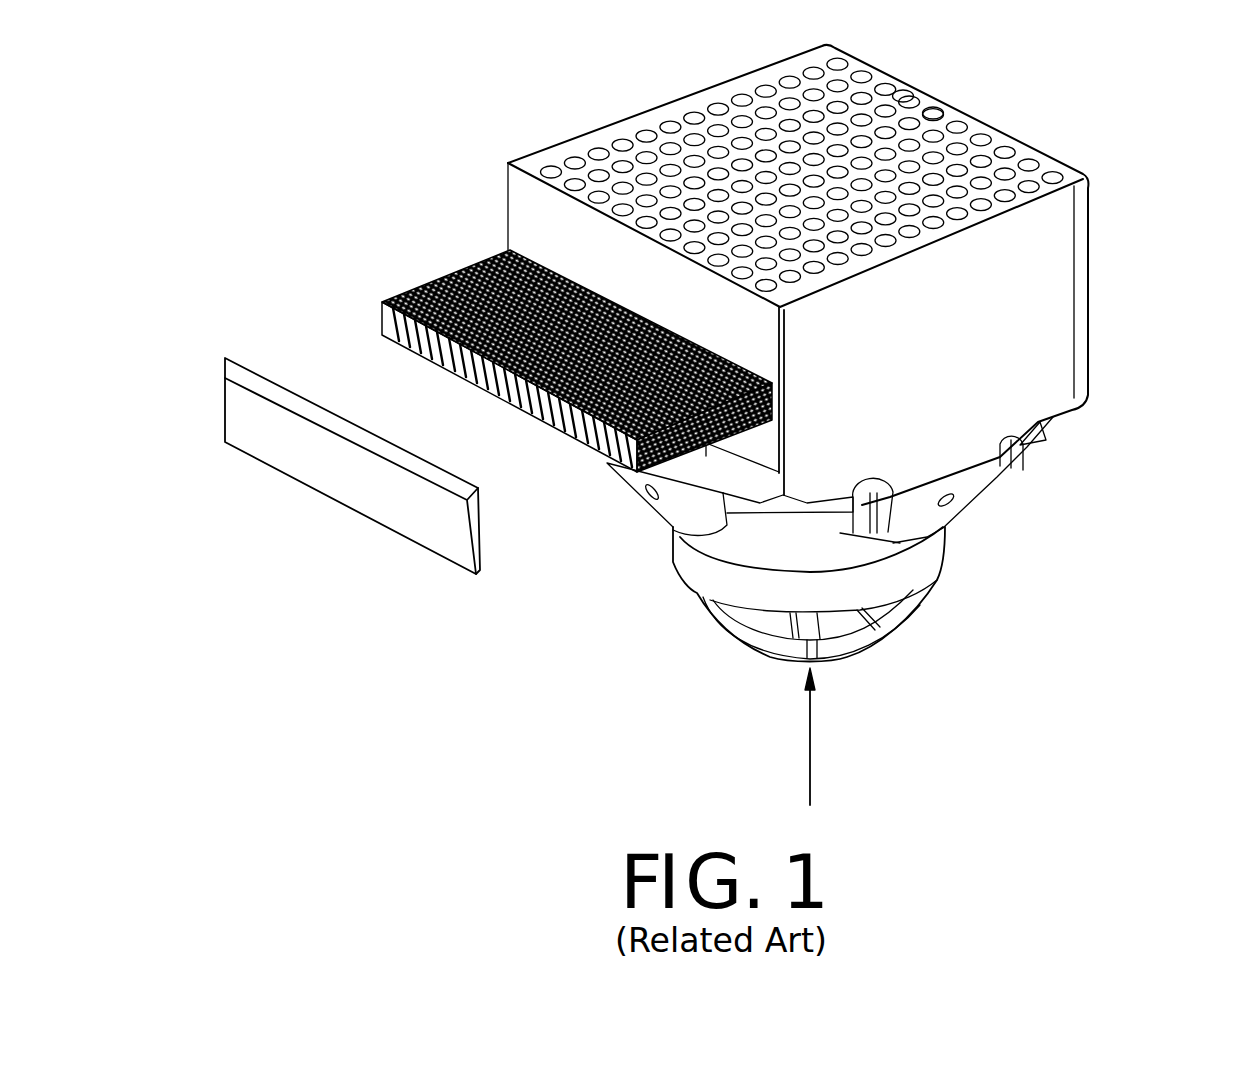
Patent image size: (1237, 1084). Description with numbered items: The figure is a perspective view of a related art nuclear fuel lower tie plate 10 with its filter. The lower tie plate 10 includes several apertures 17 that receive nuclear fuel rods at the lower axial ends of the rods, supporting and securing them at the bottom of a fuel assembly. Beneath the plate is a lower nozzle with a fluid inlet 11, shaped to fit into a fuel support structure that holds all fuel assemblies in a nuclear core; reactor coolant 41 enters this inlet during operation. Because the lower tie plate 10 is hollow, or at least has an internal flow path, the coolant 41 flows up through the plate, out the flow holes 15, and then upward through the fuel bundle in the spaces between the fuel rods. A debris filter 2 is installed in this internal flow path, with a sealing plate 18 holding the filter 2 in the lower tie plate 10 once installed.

The debris filter 2 is at (532, 243).
The lower tie plate 10 is at (1083, 240).
The fluid inlet 11 is at (853, 605).
The flow holes 15 is at (615, 158).
The apertures 17 is at (933, 110).
The sealing plate 18 is at (478, 528).
The reactor coolant 41 is at (810, 763).